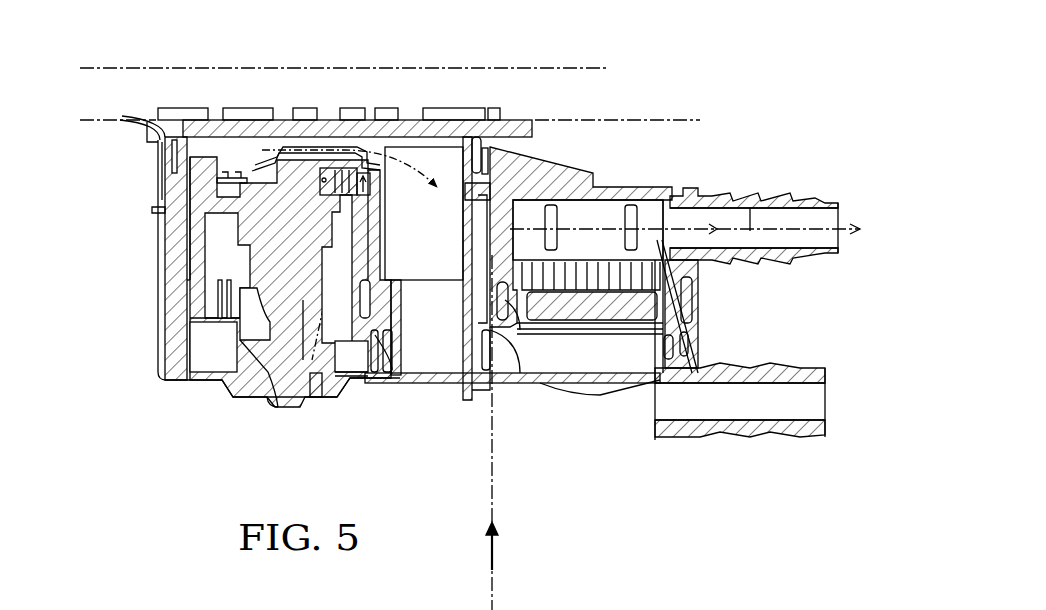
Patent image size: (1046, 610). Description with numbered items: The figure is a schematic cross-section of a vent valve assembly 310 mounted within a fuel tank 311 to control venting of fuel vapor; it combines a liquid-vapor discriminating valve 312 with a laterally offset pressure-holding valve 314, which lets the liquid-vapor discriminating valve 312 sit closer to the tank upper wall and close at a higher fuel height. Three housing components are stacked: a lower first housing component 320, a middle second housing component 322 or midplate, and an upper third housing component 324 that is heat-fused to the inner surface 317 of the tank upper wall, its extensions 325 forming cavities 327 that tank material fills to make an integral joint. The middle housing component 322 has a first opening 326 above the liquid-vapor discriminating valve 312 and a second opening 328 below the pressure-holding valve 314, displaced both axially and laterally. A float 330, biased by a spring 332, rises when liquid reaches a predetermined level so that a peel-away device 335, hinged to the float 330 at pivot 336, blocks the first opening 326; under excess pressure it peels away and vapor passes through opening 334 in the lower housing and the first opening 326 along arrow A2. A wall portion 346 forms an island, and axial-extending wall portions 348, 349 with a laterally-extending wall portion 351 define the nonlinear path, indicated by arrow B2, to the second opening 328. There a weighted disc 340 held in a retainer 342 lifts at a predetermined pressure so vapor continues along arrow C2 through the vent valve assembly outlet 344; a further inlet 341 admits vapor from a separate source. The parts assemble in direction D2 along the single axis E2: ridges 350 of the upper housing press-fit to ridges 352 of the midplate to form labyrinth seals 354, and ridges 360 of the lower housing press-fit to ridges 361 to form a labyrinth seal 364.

The vent valve assembly 310 is at (750, 112).
The fuel tank 311 is at (160, 68).
The liquid-vapor discriminating valve 312 is at (268, 402).
The pressure-holding valve 314 is at (620, 260).
The inner surface 317 is at (660, 120).
The first housing component 320 is at (170, 375).
The second housing component 322 is at (188, 285).
The third housing component 324 is at (150, 135).
The extensions 325 is at (165, 125).
The first opening 326 is at (243, 148).
The cavities 327 is at (185, 112).
The second opening 328 is at (600, 375).
The float 330 is at (290, 282).
The spring 332 is at (325, 305).
The opening 334 is at (278, 407).
The peel-away device 335 is at (200, 208).
The pivot 336 is at (353, 160).
The weighted disc 340 is at (590, 286).
The inlet 341 is at (828, 420).
The retainer 342 is at (570, 205).
The vent valve assembly outlet 344 is at (838, 229).
The wall portion 346 is at (322, 140).
The axial-extending wall portion 348 is at (424, 213).
The axial-extending wall portion 349 is at (470, 262).
The ridges 350 is at (150, 120).
The laterally-extending wall portion 351 is at (510, 372).
The ridges 352 is at (172, 160).
The labyrinth seals 354 is at (145, 152).
The ridges 360 is at (377, 345).
The ridges 361 is at (503, 305).
The labyrinth seal 364 is at (318, 420).
The arrow A2 is at (290, 107).
The arrow B2 is at (492, 375).
The arrow C2 is at (750, 208).
The direction D2 is at (492, 553).
The axis E2 is at (492, 503).